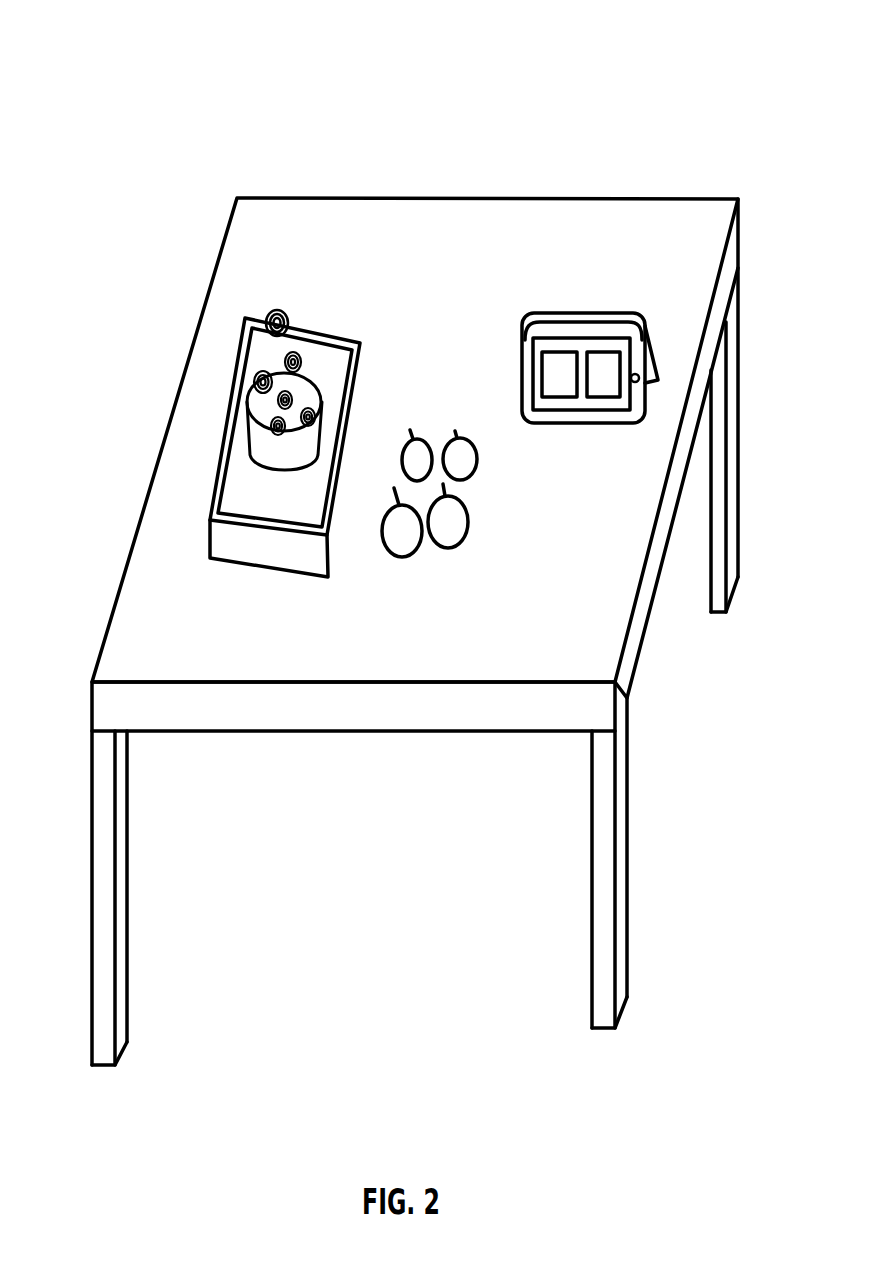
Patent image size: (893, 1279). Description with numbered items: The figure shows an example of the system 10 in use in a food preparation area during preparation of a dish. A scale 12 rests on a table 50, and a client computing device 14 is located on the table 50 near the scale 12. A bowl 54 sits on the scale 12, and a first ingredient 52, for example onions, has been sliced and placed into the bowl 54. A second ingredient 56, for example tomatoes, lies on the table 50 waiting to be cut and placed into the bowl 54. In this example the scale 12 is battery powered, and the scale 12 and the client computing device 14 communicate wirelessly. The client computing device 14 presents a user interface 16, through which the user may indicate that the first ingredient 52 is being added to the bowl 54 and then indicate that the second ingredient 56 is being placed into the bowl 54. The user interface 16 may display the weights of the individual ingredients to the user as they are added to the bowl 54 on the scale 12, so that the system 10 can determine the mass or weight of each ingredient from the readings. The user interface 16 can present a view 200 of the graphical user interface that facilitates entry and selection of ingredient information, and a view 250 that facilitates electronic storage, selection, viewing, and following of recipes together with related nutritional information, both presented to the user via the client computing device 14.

The system 10 is at (417, 540).
The scale 12 is at (228, 546).
The client computing device 14 is at (599, 381).
The user interface 16 is at (605, 316).
The table 50 is at (618, 222).
The first ingredient 52 is at (305, 300).
The bowl 54 is at (265, 442).
The second ingredient 56 is at (440, 575).
The view 200 is at (565, 370).
The view 250 is at (612, 374).